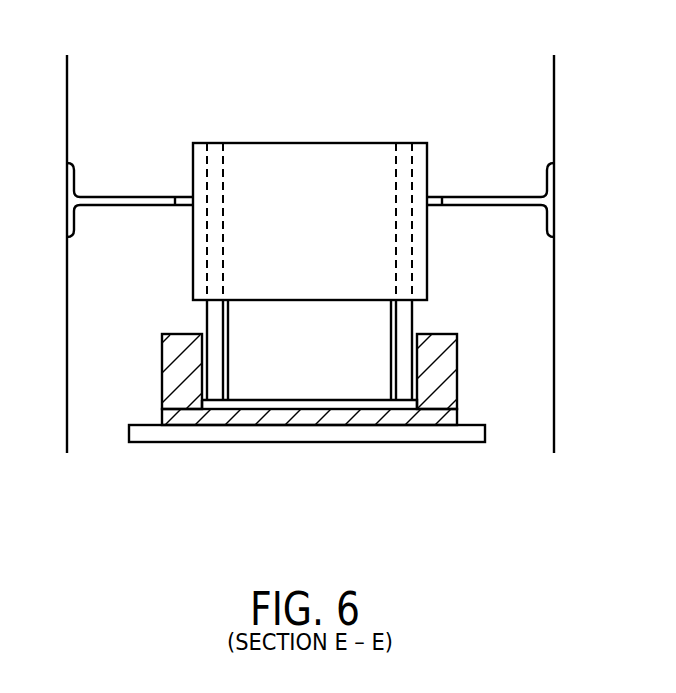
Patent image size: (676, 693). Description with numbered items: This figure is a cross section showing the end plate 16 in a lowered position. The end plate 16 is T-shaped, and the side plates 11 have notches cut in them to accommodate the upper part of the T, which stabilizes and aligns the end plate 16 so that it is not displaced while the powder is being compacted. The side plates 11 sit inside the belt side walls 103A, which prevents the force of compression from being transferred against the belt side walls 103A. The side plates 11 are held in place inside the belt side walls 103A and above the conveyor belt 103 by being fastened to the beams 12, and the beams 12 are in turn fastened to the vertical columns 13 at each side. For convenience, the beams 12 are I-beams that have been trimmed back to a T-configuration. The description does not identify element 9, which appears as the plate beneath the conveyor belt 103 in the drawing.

The vertical columns 13 is at (67, 82).
The beams 12 is at (155, 198).
The end plate 16 is at (298, 143).
The side plates 11 is at (205, 320).
The belt side walls 103A is at (457, 383).
The conveyor belt 103 is at (158, 413).
The base plate 9 is at (455, 443).